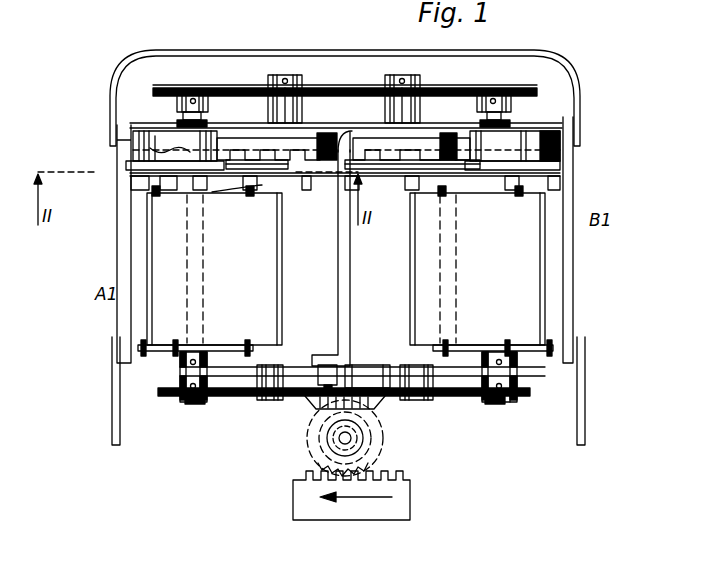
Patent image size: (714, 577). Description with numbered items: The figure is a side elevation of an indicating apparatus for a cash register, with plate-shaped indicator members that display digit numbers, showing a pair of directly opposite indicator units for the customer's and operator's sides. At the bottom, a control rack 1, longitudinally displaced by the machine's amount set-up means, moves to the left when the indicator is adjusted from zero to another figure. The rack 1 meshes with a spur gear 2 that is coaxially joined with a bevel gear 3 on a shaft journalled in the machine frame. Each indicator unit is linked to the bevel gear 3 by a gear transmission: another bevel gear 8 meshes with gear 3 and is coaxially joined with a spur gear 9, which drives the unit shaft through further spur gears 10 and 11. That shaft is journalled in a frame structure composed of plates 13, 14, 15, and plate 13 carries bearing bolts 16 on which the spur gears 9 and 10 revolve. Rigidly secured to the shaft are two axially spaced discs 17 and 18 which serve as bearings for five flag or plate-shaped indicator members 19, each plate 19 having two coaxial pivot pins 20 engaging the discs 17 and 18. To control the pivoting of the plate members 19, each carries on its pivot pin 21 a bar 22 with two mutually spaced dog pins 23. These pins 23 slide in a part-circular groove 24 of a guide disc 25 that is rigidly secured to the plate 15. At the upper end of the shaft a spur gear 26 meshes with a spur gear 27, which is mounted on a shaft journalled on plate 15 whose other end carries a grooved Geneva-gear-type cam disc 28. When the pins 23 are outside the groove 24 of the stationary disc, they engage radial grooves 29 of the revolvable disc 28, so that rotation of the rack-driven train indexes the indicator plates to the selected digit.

The control rack 1 is at (400, 497).
The spur gear 2 is at (323, 469).
The bevel gear 3 is at (378, 441).
The bevel gear 8 is at (372, 397).
The spur gear 9 is at (362, 386).
The spur gear 10 is at (252, 398).
The spur gear 11 is at (166, 397).
The plate 13 is at (320, 368).
The plate 14 is at (338, 282).
The plate 15 is at (252, 123).
The bearing bolt 16 is at (406, 380).
The disc 17 is at (160, 352).
The disc 18 is at (140, 177).
The plate-shaped indicator member 19 is at (277, 217).
The pivot pin 20 is at (250, 338).
The pivot pin 21 is at (212, 192).
The bar 22 is at (268, 166).
The dog pin 23 is at (150, 152).
The part-circular groove 24 is at (178, 148).
The guide disc 25 is at (158, 142).
The spur gear 26 is at (166, 88).
The spur gear 27 is at (315, 89).
The cam disc 28 is at (425, 145).
The radial groove 29 is at (318, 150).